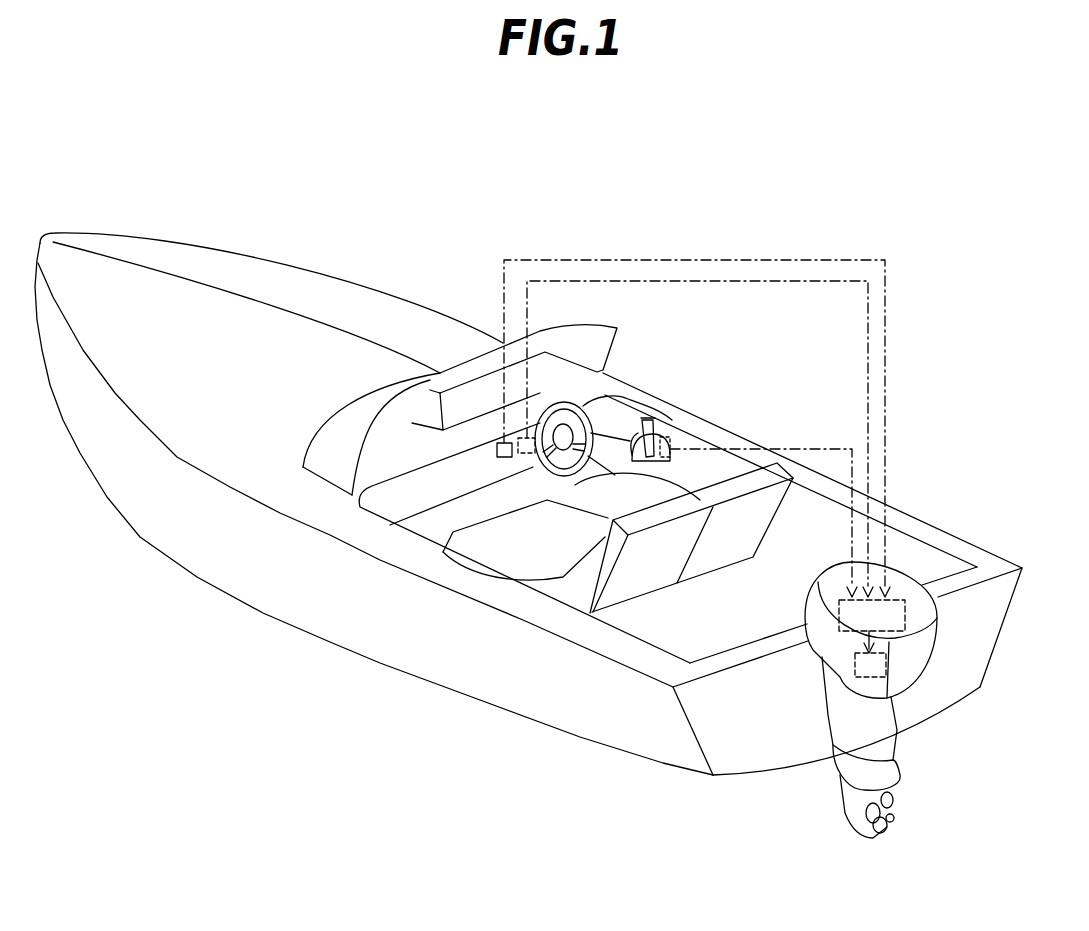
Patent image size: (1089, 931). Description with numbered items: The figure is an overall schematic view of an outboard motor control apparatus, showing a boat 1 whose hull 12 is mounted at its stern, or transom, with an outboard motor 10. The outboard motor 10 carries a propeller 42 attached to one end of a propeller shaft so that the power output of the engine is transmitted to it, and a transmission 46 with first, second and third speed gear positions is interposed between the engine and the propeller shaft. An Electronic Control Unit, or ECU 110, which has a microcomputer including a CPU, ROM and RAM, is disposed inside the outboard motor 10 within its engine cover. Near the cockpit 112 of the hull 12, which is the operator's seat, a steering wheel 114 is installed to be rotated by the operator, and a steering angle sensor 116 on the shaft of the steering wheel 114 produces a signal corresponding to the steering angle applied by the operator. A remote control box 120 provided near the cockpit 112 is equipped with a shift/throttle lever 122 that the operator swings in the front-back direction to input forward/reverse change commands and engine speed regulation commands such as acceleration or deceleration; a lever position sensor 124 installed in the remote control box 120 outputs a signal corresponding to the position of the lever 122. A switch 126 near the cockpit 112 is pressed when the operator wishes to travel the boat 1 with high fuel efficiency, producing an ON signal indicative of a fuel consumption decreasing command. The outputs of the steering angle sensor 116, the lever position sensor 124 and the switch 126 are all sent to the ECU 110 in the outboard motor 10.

The boat 1 is at (457, 212).
The hull 12 is at (292, 258).
The outboard motor 10 is at (939, 678).
The propeller 42 is at (893, 815).
The transmission 46 is at (887, 663).
The Electronic Control Unit (ECU) 110 is at (913, 595).
The cockpit 112 is at (635, 510).
The steering wheel 114 is at (583, 410).
The steering angle sensor 116 is at (527, 455).
The remote control box 120 is at (707, 411).
The shift/throttle lever 122 is at (648, 420).
The lever position sensor 124 is at (672, 440).
The switch 126 is at (497, 450).